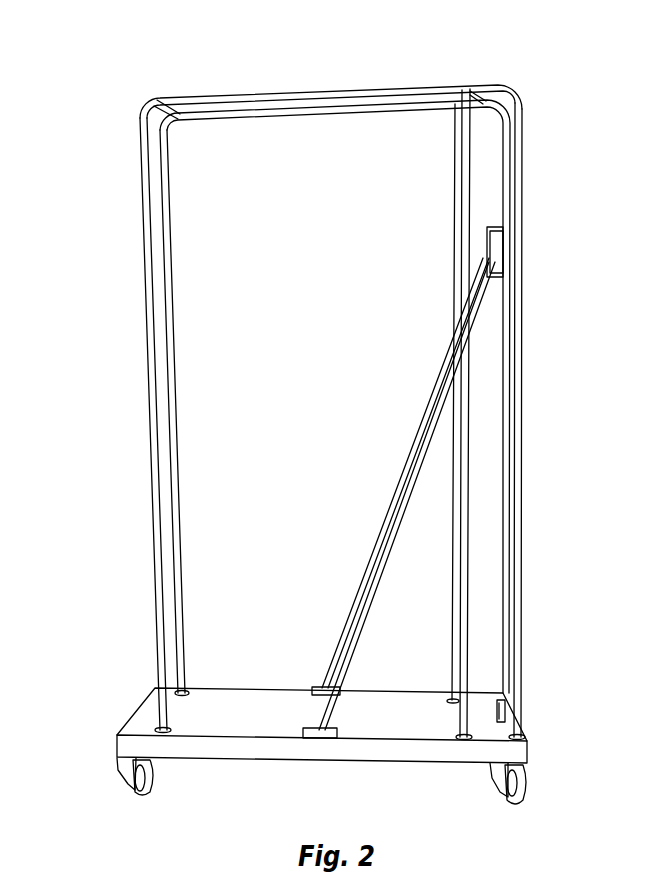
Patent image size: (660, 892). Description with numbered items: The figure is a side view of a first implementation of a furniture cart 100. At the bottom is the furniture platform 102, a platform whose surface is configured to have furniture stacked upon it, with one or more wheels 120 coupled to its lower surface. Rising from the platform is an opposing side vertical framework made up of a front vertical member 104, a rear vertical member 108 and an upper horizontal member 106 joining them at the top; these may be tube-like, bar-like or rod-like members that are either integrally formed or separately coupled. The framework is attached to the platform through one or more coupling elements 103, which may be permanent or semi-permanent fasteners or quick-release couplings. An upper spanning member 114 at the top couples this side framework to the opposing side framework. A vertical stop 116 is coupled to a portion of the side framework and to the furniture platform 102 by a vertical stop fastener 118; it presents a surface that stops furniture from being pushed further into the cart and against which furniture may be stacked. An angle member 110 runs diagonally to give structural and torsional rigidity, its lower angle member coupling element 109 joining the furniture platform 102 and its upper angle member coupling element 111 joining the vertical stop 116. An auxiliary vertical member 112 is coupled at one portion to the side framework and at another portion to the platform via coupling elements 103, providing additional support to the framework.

The furniture cart 100 is at (548, 353).
The furniture platform 102 is at (247, 748).
The coupling element 103 is at (158, 728).
The front vertical member 104 is at (147, 290).
The upper horizontal member 106 is at (345, 95).
The rear vertical member 108 is at (522, 305).
The lower angle member coupling element 109 is at (320, 738).
The angle member 110 is at (380, 568).
The upper angle member coupling element 111 is at (497, 240).
The auxiliary vertical member 112 is at (462, 682).
The upper spanning member 114 is at (178, 112).
The vertical stop 116 is at (512, 133).
The vertical stop fastener 118 is at (505, 712).
The wheel 120 is at (128, 770).